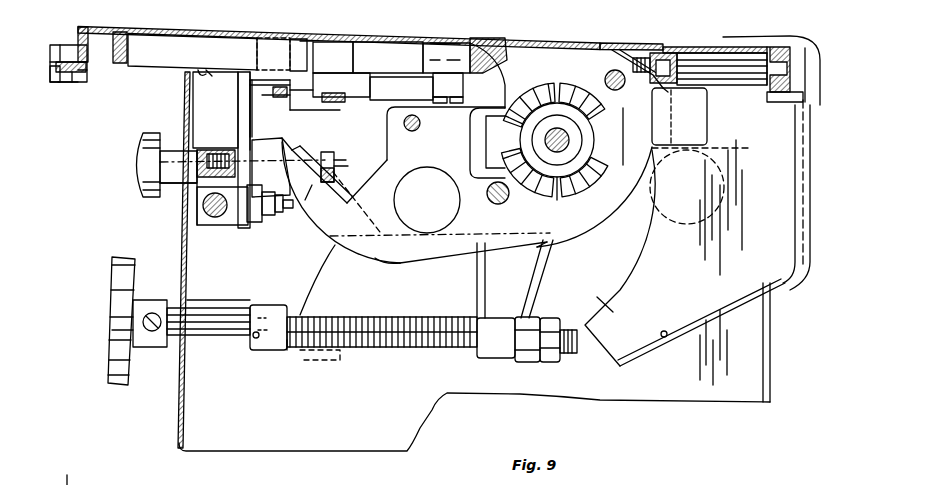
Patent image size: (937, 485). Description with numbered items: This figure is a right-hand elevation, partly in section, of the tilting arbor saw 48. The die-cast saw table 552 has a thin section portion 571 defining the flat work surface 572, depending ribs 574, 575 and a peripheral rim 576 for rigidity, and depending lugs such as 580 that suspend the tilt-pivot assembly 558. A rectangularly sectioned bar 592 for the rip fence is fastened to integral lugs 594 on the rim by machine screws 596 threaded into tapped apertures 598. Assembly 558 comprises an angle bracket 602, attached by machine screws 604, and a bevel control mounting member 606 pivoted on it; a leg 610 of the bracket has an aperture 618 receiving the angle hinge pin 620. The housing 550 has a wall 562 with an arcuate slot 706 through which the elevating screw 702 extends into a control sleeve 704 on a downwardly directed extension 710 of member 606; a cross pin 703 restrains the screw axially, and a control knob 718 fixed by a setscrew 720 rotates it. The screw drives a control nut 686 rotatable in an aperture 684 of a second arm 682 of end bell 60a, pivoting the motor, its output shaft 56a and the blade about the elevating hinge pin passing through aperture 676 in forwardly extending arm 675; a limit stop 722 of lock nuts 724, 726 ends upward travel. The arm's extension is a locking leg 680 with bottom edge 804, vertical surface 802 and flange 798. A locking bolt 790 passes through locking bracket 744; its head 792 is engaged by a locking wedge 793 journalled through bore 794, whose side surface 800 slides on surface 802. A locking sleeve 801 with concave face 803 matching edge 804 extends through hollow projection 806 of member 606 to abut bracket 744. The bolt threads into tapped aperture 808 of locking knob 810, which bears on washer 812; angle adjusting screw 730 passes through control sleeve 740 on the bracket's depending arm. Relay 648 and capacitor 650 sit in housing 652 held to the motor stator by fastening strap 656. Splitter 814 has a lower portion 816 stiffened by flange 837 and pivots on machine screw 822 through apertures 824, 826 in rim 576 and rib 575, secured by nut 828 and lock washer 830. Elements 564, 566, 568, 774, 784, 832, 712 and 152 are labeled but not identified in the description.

The tilting arbor saw 48 is at (275, 25).
The work surface 572 is at (605, 45).
The bar 592 is at (62, 44).
The machine screws 596 is at (50, 74).
The integral lugs 594 is at (66, 83).
The tapped apertures 598 is at (88, 74).
The depending rib 574 is at (157, 67).
The pin 566 is at (201, 70).
The slot 564 is at (212, 72).
The support block 568 is at (215, 110).
The locking bracket 744 is at (238, 110).
The locking bolt 790 is at (238, 140).
The washer 812 is at (230, 152).
The bracket 774 is at (280, 79).
The angle hinge pin 620 is at (310, 39).
The depending lug 580 is at (334, 42).
The thin section portion 571 is at (383, 42).
The leg of angle bracket 610 is at (440, 50).
The saw table 552 is at (443, 30).
The aperture 618 is at (470, 40).
The angle bracket 602 is at (360, 82).
The depending rib 575 is at (388, 77).
The machine screws 604 is at (347, 102).
The pin 784 is at (297, 90).
The locking knob 810 is at (137, 166).
The tapped aperture 808 is at (190, 176).
The control sleeve 740 is at (196, 212).
The housing 550 is at (178, 240).
The angle adjusting screw 730 is at (215, 218).
The hollow projection 806 is at (262, 146).
The locking sleeve 801 is at (290, 150).
The concave face 803 is at (300, 150).
The vertical surface 802 is at (275, 216).
The locking leg 680 is at (315, 205).
The bottom edge 804 is at (320, 228).
The side surface 800 is at (326, 156).
The locking wedge 793 is at (346, 160).
The head of locking bolt 792 is at (336, 163).
The bolt-receiving bore 794 is at (335, 175).
The flange 798 is at (352, 199).
The tilt-pivot assembly 558 is at (385, 127).
The aperture 676 is at (413, 131).
The arm 675 is at (433, 261).
The bevel control mounting member 606 is at (355, 282).
The motor output shaft 56a is at (570, 141).
The end bell 60a is at (648, 225).
The block 832 is at (708, 104).
The fastening strap 656 is at (646, 110).
The machine screw 822 is at (790, 60).
The nut 828 is at (652, 52).
The aperture 826 is at (670, 58).
The lock washer 830 is at (660, 88).
The peripheral rim 576 is at (775, 93).
The aperture 824 is at (781, 102).
The relay 648 is at (750, 150).
The capacitor 650 is at (745, 180).
The housing 652 is at (668, 236).
The housing wall 562 is at (180, 402).
The splitter 814 is at (775, 290).
The flange 837 is at (664, 338).
The lower portion of splitter 816 is at (590, 300).
The second arm 682 is at (548, 268).
The aperture 684 is at (503, 358).
The lock nut 724 is at (533, 318).
The lock nut 726 is at (565, 360).
The limit stop 722 is at (553, 367).
The elevating screw 702 is at (400, 348).
The control nut 686 is at (333, 362).
The block 712 is at (276, 305).
The cross pin 703 is at (255, 340).
The control sleeve 704 is at (272, 352).
The arcuate slot 706 is at (183, 298).
The downwardly directed extension 710 is at (252, 295).
The setscrew 720 is at (158, 300).
The control knob 718 is at (112, 306).
The base 152 is at (79, 471).